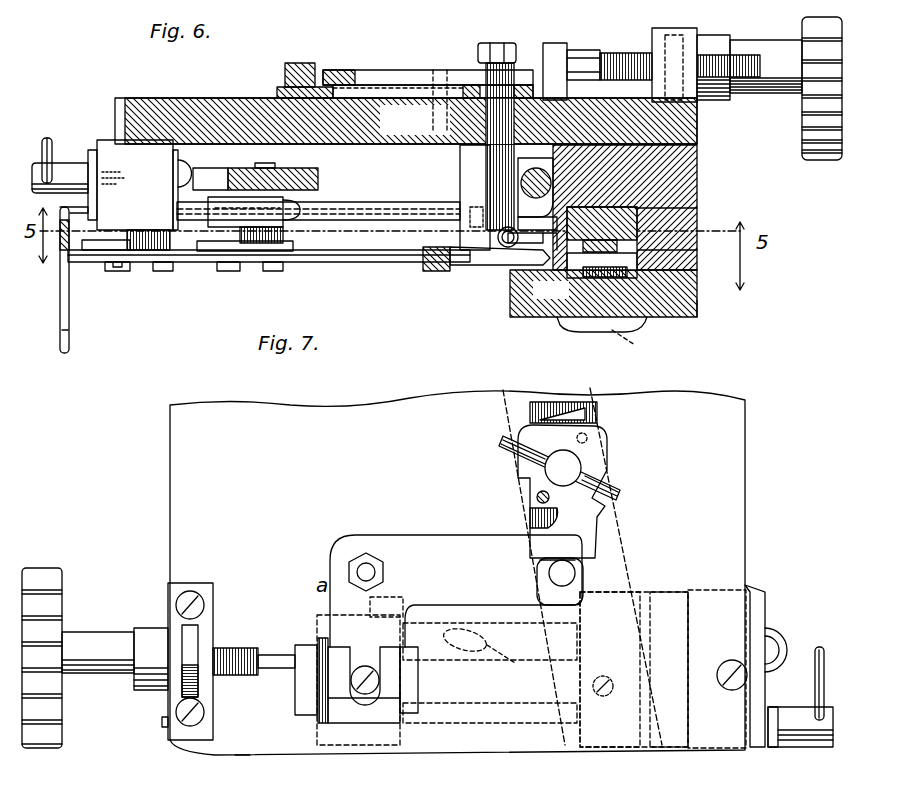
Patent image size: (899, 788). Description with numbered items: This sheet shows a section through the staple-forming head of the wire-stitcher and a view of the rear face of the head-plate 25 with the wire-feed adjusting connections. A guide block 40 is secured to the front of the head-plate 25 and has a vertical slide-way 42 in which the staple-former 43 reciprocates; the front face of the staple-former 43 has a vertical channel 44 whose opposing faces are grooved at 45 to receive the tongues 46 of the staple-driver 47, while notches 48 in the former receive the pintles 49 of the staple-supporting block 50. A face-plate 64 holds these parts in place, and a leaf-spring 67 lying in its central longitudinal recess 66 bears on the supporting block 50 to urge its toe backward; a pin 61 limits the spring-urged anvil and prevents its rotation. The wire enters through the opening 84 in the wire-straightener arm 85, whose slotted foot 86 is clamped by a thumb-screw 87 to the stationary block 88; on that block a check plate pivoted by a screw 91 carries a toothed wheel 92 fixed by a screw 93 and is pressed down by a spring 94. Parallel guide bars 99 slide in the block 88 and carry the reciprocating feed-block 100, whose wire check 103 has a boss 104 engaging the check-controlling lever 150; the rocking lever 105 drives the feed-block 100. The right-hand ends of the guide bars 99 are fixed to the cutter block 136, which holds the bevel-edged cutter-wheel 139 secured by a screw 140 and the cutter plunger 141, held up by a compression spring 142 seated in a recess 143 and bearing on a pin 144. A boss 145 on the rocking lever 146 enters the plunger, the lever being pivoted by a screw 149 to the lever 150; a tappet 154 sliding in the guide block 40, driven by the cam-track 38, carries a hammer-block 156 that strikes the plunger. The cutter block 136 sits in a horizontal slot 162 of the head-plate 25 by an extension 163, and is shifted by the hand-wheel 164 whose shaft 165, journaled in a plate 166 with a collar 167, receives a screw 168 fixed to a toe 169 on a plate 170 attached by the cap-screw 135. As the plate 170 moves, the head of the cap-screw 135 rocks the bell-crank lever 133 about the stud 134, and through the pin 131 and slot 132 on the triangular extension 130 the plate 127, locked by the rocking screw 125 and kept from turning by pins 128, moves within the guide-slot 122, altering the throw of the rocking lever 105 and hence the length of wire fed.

In FIG. 6, the head-plate 25 is at (222, 84).
In FIG. 7, the head-plate 25 is at (457, 573).
In FIG. 7, the cam-track 38 is at (350, 776).
In FIG. 6, the guide block 40 is at (682, 188).
In FIG. 6, the slide-way 42 is at (622, 214).
In FIG. 6, the staple-former 43 is at (640, 240).
In FIG. 6, the vertical channel 44 is at (630, 246).
In FIG. 6, the grooves 45 is at (640, 272).
In FIG. 6, the tongues 46 is at (580, 240).
In FIG. 6, the staple-driver 47 is at (614, 240).
In FIG. 6, the notches 48 is at (698, 300).
In FIG. 6, the pintles 49 is at (540, 290).
In FIG. 6, the staple-supporting block 50 is at (603, 320).
In FIG. 7, the staple-supporting block 50 is at (247, 763).
In FIG. 7, the pin 61 is at (163, 730).
In FIG. 6, the face-plate 64 is at (556, 300).
In FIG. 6, the central longitudinal recess 66 is at (640, 333).
In FIG. 6, the leaf-spring 67 is at (590, 292).
In FIG. 6, the opening 84 is at (63, 235).
In FIG. 6, the arm 85 is at (66, 318).
In FIG. 6, the slotted foot 86 is at (92, 150).
In FIG. 7, the slotted foot 86 is at (770, 742).
In FIG. 6, the thumb-screw 87 is at (48, 138).
In FIG. 7, the thumb-screw 87 is at (827, 636).
In FIG. 6, the stationary block 88 is at (135, 185).
In FIG. 7, the stationary block 88 is at (762, 603).
In FIG. 6, the screw 91 is at (114, 262).
In FIG. 6, the toothed wheel 92 is at (158, 243).
In FIG. 6, the screw 93 is at (103, 252).
In FIG. 7, the screw 93 is at (770, 670).
In FIG. 6, the spring 94 is at (180, 192).
In FIG. 6, the guide bars 99 is at (367, 210).
In FIG. 7, the guide bars 99 is at (506, 655).
In FIG. 6, the feed-block 100 is at (222, 251).
In FIG. 7, the feed-block 100 is at (667, 590).
In FIG. 6, the wire check 103 is at (215, 265).
In FIG. 6, the cylindrical boss 104 is at (276, 265).
In FIG. 6, the rocking lever 105 is at (318, 180).
In FIG. 7, the rocking lever 105 is at (533, 408).
In FIG. 7, the guide-slot 122 is at (600, 412).
In FIG. 7, the rocking screw 125 is at (600, 476).
In FIG. 7, the plate 127 is at (600, 462).
In FIG. 7, the pins 128 is at (606, 437).
In FIG. 6, the triangular extension 130 is at (290, 62).
In FIG. 7, the triangular extension 130 is at (580, 527).
In FIG. 6, the pin 131 is at (305, 64).
In FIG. 7, the pin 131 is at (577, 573).
In FIG. 6, the slot 132 is at (340, 68).
In FIG. 7, the slot 132 is at (537, 571).
In FIG. 6, the bell-crank lever 133 is at (373, 79).
In FIG. 7, the bell-crank lever 133 is at (456, 591).
In FIG. 6, the stud 134 is at (482, 50).
In FIG. 7, the stud 134 is at (362, 556).
In FIG. 7, the cap-screw 135 is at (303, 688).
In FIG. 7, the cutter block 136 is at (385, 745).
In FIG. 6, the cutter-wheel 139 is at (540, 240).
In FIG. 6, the screw 140 is at (560, 220).
In FIG. 6, the cutter plunger 141 is at (518, 212).
In FIG. 6, the compression spring 142 is at (500, 246).
In FIG. 6, the recess 143 is at (500, 223).
In FIG. 6, the pin 144 is at (530, 262).
In FIG. 6, the boss 145 is at (603, 293).
In FIG. 6, the rocking lever 146 is at (430, 248).
In FIG. 6, the screw 149 is at (425, 268).
In FIG. 6, the check-controlling lever 150 is at (340, 262).
In FIG. 7, the check-controlling lever 150 is at (782, 648).
In FIG. 6, the tappet 154 is at (462, 170).
In FIG. 6, the hammer-block 156 is at (481, 186).
In FIG. 6, the horizontal slot 162 is at (425, 85).
In FIG. 7, the horizontal slot 162 is at (418, 683).
In FIG. 6, the extension 163 is at (447, 122).
In FIG. 6, the hand-wheel 164 is at (821, 143).
In FIG. 7, the hand-wheel 164 is at (44, 617).
In FIG. 6, the shaft 165 is at (787, 68).
In FIG. 7, the shaft 165 is at (103, 645).
In FIG. 6, the plate 166 is at (658, 45).
In FIG. 7, the plate 166 is at (175, 697).
In FIG. 6, the collar 167 is at (684, 45).
In FIG. 7, the collar 167 is at (190, 652).
In FIG. 6, the screw 168 is at (650, 70).
In FIG. 7, the screw 168 is at (248, 668).
In FIG. 6, the toe 169 is at (548, 45).
In FIG. 7, the toe 169 is at (303, 647).
In FIG. 6, the plate 170 is at (566, 96).
In FIG. 7, the plate 170 is at (365, 713).